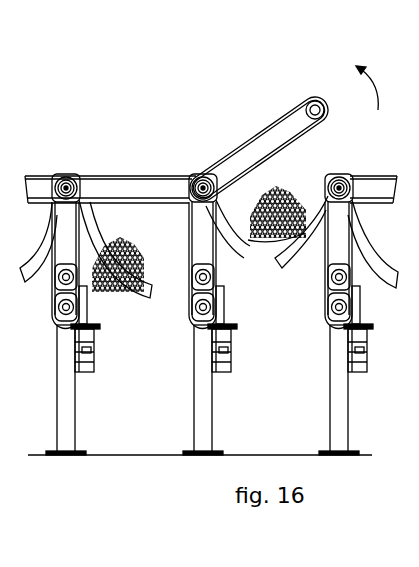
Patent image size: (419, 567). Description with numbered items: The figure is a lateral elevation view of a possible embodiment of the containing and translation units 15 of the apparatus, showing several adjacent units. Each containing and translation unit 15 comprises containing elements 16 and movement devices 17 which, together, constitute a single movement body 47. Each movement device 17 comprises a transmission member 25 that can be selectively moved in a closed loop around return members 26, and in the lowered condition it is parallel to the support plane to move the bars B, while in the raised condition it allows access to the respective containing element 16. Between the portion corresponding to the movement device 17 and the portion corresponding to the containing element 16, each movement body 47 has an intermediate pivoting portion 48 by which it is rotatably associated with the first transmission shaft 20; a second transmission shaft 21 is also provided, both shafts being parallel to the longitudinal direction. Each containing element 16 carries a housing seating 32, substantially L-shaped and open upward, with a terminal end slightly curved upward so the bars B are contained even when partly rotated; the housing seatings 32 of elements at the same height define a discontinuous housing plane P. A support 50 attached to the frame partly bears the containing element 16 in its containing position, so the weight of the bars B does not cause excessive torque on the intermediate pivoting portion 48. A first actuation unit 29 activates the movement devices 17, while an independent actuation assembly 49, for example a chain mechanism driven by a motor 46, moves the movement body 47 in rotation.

The containing and translation unit 15 is at (149, 394).
The containing element 16 is at (84, 205).
The movement device 17 is at (122, 192).
The first transmission shaft 20 is at (208, 167).
The second transmission shaft 21 is at (54, 176).
The transmission member 25 is at (141, 176).
The return member 26 is at (324, 104).
The first actuation unit 29 is at (60, 284).
The housing seating 32 is at (192, 202).
The motor 46 is at (92, 368).
The movement body 47 is at (112, 176).
The intermediate pivoting portion 48 is at (75, 174).
The actuation assembly 49 is at (59, 322).
The support 50 is at (43, 272).
The bars B is at (132, 246).
The housing plane P is at (86, 277).